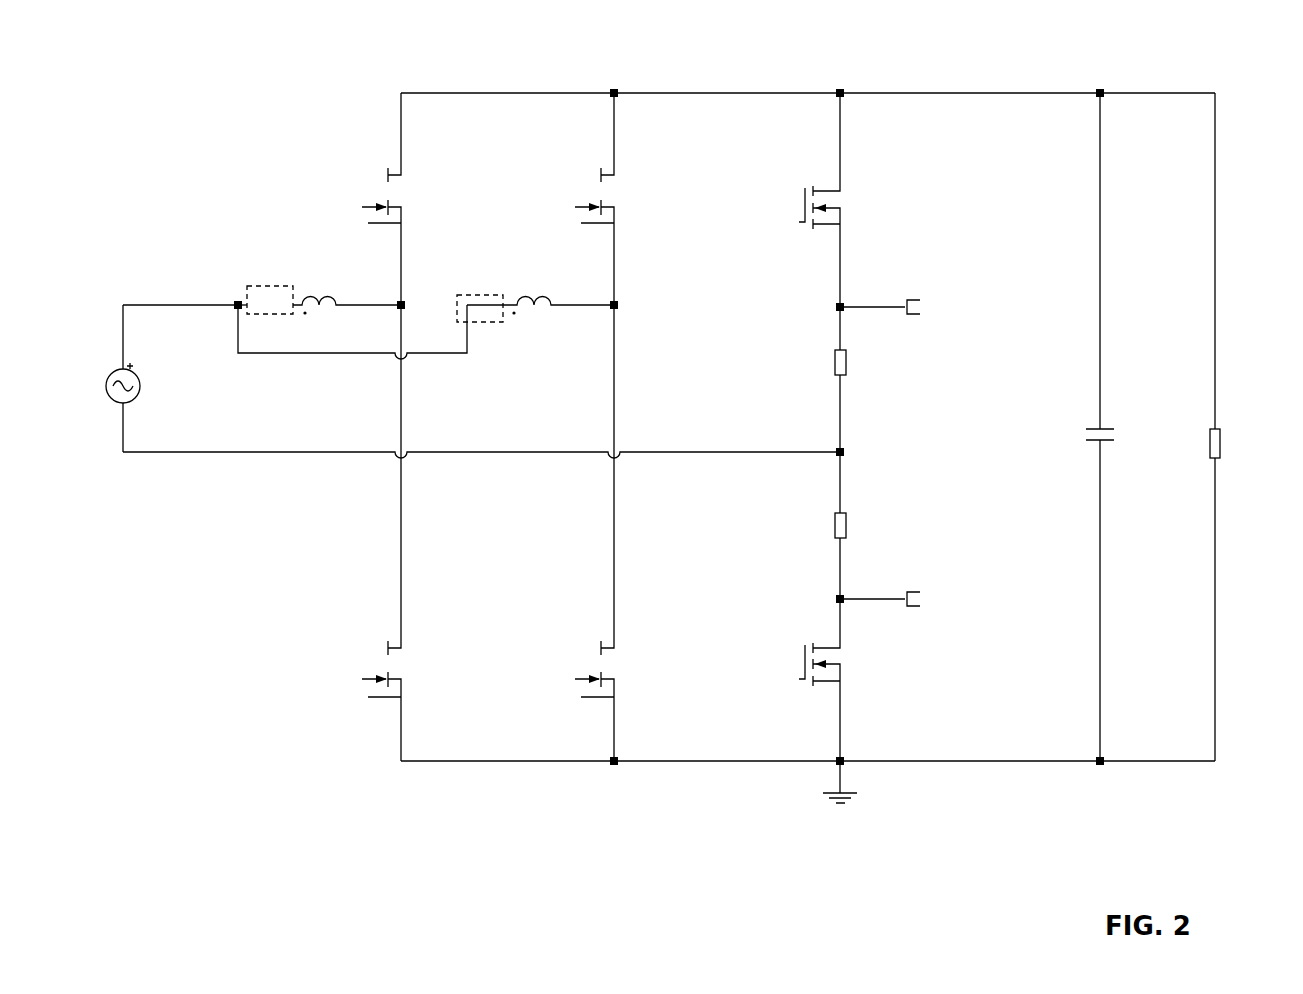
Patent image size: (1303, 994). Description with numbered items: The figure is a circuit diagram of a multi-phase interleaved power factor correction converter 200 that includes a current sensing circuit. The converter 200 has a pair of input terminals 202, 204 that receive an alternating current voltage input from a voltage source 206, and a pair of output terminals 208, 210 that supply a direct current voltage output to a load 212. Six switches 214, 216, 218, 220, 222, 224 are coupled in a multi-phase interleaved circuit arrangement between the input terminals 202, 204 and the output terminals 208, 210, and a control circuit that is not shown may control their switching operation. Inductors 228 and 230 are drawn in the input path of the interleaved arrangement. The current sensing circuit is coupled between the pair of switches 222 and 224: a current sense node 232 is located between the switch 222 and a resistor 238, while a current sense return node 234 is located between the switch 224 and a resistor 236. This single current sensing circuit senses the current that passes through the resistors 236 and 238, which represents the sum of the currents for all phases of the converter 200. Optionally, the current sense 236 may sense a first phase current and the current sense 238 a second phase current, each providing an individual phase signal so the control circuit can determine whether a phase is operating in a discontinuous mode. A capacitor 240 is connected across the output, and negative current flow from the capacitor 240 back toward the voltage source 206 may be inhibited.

The multi-phase interleaved power factor correction converter 200 is at (143, 55).
The input terminal 202 is at (123, 302).
The input terminal 204 is at (123, 455).
The voltage source 206 is at (136, 372).
The output terminal 208 is at (1201, 93).
The output terminal 210 is at (1215, 761).
The load 212 is at (1215, 429).
The switch 214 is at (393, 263).
The switch 216 is at (393, 735).
The switch 218 is at (594, 263).
The switch 220 is at (594, 735).
The switch 222 is at (831, 263).
The switch 224 is at (831, 717).
The first inductor 228 is at (378, 345).
The second inductor 230 is at (578, 348).
The current sense node 232 is at (991, 313).
The current sense return node 234 is at (991, 602).
The resistor 236 is at (262, 287).
The resistor 238 is at (470, 296).
The capacitor 240 is at (1170, 454).